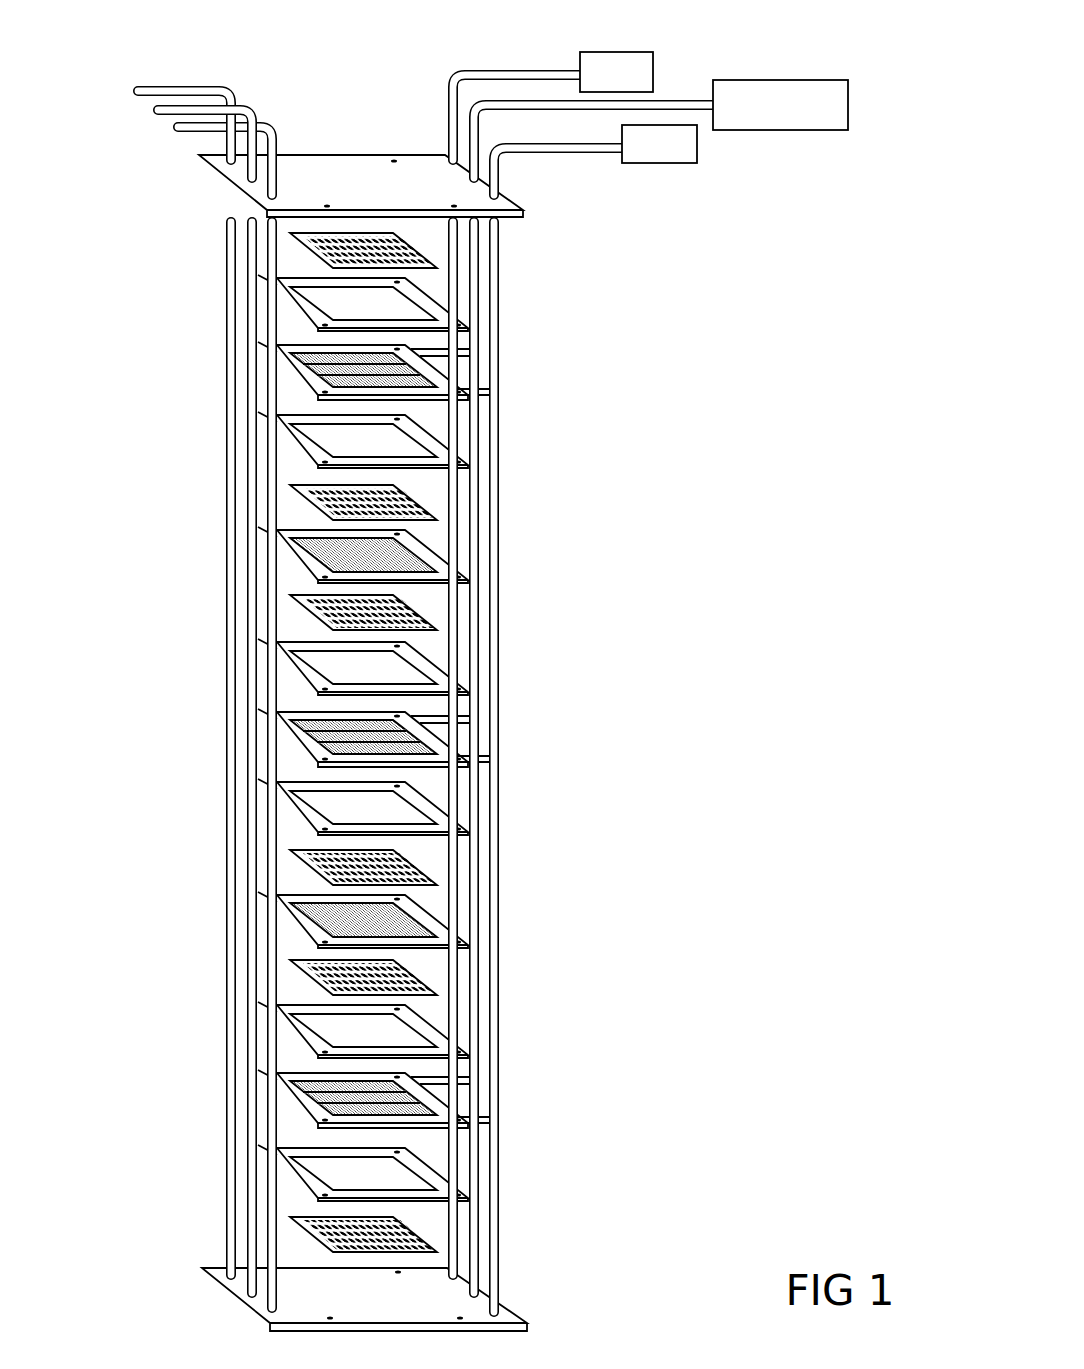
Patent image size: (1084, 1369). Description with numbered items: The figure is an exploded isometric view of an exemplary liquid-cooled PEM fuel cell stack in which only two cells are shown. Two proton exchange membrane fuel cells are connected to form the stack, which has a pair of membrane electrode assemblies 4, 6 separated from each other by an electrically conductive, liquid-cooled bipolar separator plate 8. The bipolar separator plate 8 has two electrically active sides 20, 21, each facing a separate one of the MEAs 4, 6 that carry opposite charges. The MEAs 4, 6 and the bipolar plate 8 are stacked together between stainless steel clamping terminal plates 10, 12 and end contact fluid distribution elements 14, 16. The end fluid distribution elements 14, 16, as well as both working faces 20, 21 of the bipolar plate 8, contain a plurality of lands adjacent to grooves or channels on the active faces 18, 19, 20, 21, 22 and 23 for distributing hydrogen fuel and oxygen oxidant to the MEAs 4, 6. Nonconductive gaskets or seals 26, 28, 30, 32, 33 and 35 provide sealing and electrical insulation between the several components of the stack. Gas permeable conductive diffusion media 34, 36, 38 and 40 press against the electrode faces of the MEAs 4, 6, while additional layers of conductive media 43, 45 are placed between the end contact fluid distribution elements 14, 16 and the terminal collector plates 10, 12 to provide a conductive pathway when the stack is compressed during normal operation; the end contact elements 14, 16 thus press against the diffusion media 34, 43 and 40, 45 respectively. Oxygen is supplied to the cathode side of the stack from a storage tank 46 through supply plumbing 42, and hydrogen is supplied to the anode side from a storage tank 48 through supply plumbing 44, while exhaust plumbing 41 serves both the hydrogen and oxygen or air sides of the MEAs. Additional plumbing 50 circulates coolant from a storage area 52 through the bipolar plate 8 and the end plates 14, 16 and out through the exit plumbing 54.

The membrane electrode assembly 4 is at (280, 562).
The membrane electrode assembly 6 is at (438, 913).
The bipolar separator plate 8 is at (275, 750).
The clamping terminal plate 10 is at (385, 195).
The clamping terminal plate 12 is at (407, 1313).
The end contact fluid distribution element 14 is at (278, 378).
The end contact fluid distribution element 16 is at (276, 1121).
The active face 18 is at (410, 358).
The active face 19 is at (432, 414).
The electrically active side 20 is at (290, 708).
The electrically active side 21 is at (305, 772).
The active face 22 is at (423, 1103).
The active face 23 is at (313, 1137).
The nonconductive gasket 26 is at (283, 440).
The nonconductive gasket 28 is at (283, 670).
The nonconductive gasket 30 is at (455, 812).
The nonconductive gasket 32 is at (282, 1035).
The nonconductive gasket 33 is at (433, 1162).
The gas diffusion media 34 is at (310, 500).
The nonconductive gasket 35 is at (287, 306).
The gas diffusion media 36 is at (310, 614).
The gas diffusion media 38 is at (310, 866).
The gas diffusion media 40 is at (310, 976).
The exhaust plumbing 41 is at (277, 132).
The supply plumbing 42 is at (450, 103).
The conductive media layer 43 is at (310, 242).
The supply plumbing 44 is at (495, 170).
The conductive media layer 45 is at (310, 1235).
The storage tank 46 is at (640, 57).
The storage tank 48 is at (690, 163).
The coolant plumbing 50 is at (675, 105).
The coolant storage area 52 is at (758, 87).
The exit plumbing 54 is at (235, 103).